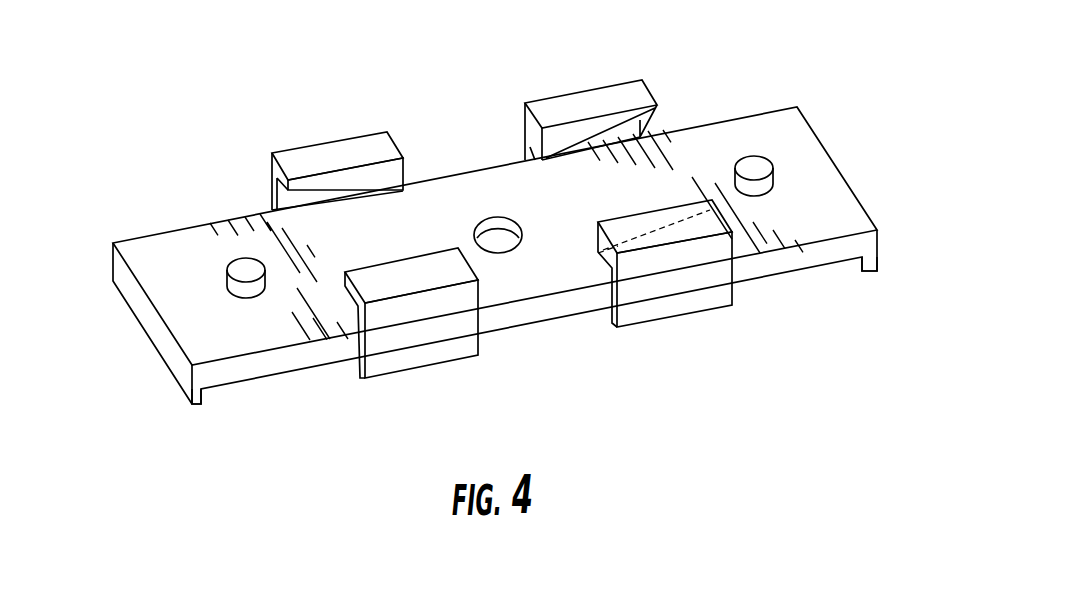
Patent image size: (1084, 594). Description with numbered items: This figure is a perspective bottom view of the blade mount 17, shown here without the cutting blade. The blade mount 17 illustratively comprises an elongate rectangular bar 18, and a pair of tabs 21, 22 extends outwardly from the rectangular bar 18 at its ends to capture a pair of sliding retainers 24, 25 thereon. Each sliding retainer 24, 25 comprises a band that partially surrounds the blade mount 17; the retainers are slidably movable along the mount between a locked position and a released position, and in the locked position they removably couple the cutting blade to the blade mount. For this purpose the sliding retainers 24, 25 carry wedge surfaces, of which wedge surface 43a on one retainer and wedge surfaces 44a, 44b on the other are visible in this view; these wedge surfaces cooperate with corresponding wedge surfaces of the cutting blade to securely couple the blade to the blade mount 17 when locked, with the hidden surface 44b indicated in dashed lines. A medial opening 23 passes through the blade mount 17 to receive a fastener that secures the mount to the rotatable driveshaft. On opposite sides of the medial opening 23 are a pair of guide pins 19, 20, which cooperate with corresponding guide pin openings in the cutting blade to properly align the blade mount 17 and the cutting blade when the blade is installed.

The blade mount 17 is at (143, 152).
The elongate rectangular bar 18 is at (248, 222).
The guide pin 19 is at (237, 263).
The guide pin 20 is at (773, 167).
The tab 21 is at (200, 404).
The tab 22 is at (873, 272).
The medial opening 23 is at (500, 250).
The sliding retainer 24 is at (305, 138).
The sliding retainer 25 is at (565, 87).
The wedge surface 43a is at (362, 178).
The wedge surface 44a is at (608, 128).
The wedge surface 44b is at (622, 232).